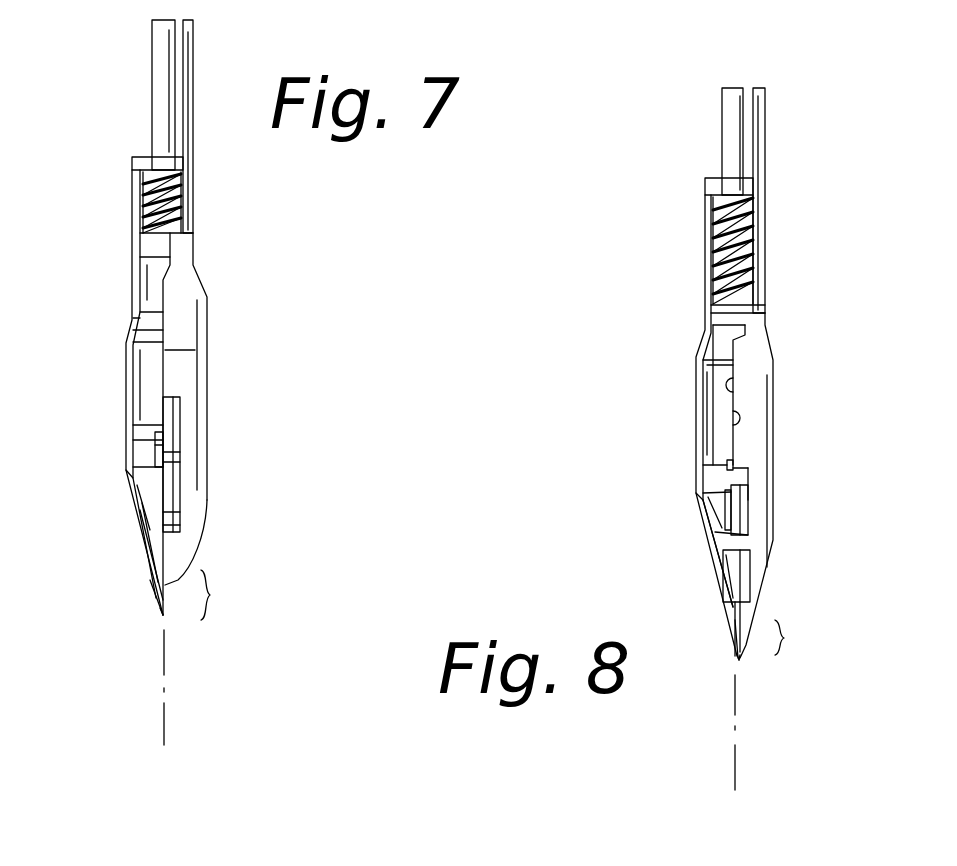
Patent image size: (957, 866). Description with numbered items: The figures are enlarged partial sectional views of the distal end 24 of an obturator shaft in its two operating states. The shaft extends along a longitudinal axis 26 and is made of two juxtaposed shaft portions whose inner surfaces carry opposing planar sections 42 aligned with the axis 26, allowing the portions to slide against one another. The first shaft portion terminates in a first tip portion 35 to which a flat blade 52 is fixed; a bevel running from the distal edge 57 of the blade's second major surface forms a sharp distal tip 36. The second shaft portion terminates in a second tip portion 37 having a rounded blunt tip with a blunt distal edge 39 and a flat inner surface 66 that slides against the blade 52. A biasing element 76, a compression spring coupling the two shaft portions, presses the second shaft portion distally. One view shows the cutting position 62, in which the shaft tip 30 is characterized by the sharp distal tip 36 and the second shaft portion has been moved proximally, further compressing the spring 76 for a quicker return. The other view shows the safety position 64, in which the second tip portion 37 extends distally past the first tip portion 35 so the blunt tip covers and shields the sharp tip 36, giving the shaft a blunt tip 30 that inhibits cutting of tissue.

In FIG. 7, the biasing element 76 is at (148, 190).
In FIG. 8, the biasing element 76 is at (713, 220).
In FIG. 7, the opposing planar section 42 is at (131, 325).
In FIG. 8, the opposing planar section 42 is at (730, 378).
In FIG. 7, the blade 52 is at (160, 490).
In FIG. 8, the blade 52 is at (730, 510).
In FIG. 7, the first tip portion 35 is at (127, 490).
In FIG. 8, the first tip portion 35 is at (705, 547).
In FIG. 7, the second tip portion 37 is at (207, 503).
In FIG. 8, the second tip portion 37 is at (769, 585).
In FIG. 7, the distal end 24 is at (153, 538).
In FIG. 8, the distal end 24 is at (740, 621).
In FIG. 7, the sharp distal tip 36 is at (156, 596).
In FIG. 7, the cutting position 62 is at (227, 595).
In FIG. 7, the tip 30 is at (163, 615).
In FIG. 7, the longitudinal axis 26 is at (165, 725).
In FIG. 8, the longitudinal axis 26 is at (733, 768).
In FIG. 8, the distal edge of the second major surface 57 is at (728, 620).
In FIG. 8, the safety position 64 is at (798, 637).
In FIG. 8, the flat inner surface 66 is at (737, 654).
In FIG. 8, the blunt distal edge 39 is at (739, 658).